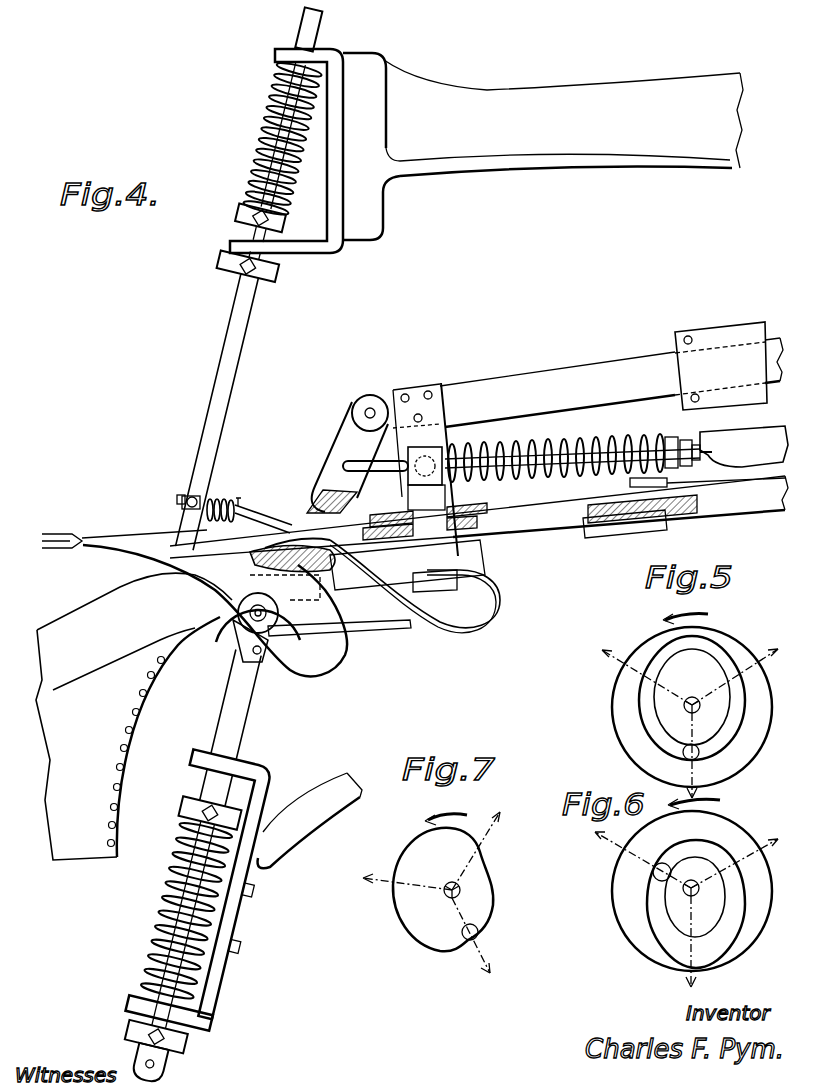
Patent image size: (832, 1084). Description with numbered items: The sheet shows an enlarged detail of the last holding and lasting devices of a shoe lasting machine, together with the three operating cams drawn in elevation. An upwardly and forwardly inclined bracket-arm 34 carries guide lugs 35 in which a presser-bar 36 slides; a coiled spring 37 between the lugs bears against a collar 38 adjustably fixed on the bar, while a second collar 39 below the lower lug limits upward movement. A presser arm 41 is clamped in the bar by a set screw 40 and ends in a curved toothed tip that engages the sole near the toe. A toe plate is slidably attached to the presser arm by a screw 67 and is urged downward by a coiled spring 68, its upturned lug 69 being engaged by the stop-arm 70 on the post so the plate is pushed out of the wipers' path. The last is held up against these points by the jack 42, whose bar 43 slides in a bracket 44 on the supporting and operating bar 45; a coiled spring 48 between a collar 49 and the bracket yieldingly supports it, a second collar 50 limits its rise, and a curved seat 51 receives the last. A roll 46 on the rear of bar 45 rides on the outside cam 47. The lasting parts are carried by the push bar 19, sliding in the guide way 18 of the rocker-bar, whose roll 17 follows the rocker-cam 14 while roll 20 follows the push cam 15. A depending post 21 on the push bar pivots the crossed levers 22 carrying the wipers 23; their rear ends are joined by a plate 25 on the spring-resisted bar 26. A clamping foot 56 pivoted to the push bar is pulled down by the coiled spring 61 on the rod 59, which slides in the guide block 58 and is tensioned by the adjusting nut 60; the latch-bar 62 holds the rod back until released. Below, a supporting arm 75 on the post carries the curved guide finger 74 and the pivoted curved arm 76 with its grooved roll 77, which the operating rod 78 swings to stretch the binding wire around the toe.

In FIG. 5, the rocker-cam 14 is at (612, 717).
In FIG. 6, the push cam 15 is at (737, 942).
In FIG. 5, the roll 17 is at (683, 753).
In FIG. 4, the supporting guide way 18 is at (720, 332).
In FIG. 4, the push bar 19 is at (597, 370).
In FIG. 6, the roll 20 is at (655, 875).
In FIG. 4, the depending post 21 is at (448, 497).
In FIG. 4, the crossed levers 22 is at (556, 515).
In FIG. 4, the wipers 23 is at (425, 516).
In FIG. 4, the plate 25 is at (600, 530).
In FIG. 4, the bar 26 is at (758, 512).
In FIG. 4, the bracket-arm 34 is at (543, 146).
In FIG. 4, the guide lugs 35 is at (282, 50).
In FIG. 4, the presser-bar 36 is at (222, 420).
In FIG. 4, the coiled spring 37 is at (262, 130).
In FIG. 4, the collar 38 is at (243, 203).
In FIG. 4, the second collar 39 is at (213, 274).
In FIG. 4, the set screw 40 is at (183, 503).
In FIG. 4, the presser arm 41 is at (183, 500).
In FIG. 4, the jack 42 is at (134, 762).
In FIG. 4, the bar 43 is at (243, 705).
In FIG. 4, the bracket 44 is at (272, 788).
In FIG. 4, the supporting and operating bar 45 is at (300, 840).
In FIG. 7, the roll 46 is at (480, 932).
In FIG. 7, the outside cam 47 is at (410, 920).
In FIG. 4, the coiled spring 48 is at (175, 890).
In FIG. 4, the collar 49 is at (182, 810).
In FIG. 4, the second collar 50 is at (130, 1035).
In FIG. 4, the curved seat 51 is at (283, 614).
In FIG. 4, the clamping foot 56 is at (347, 425).
In FIG. 4, the guide block 58 is at (445, 450).
In FIG. 4, the rod 59 is at (367, 462).
In FIG. 4, the adjusting nut 60 is at (676, 440).
In FIG. 4, the coiled spring 61 is at (586, 442).
In FIG. 4, the latch-bar 62 is at (744, 446).
In FIG. 4, the screw 67 is at (290, 525).
In FIG. 4, the coiled spring 68 is at (205, 512).
In FIG. 4, the lug 69 is at (240, 500).
In FIG. 4, the stop-arm 70 is at (256, 500).
In FIG. 4, the curved guide finger 74 is at (465, 617).
In FIG. 4, the supporting arm 75 is at (398, 565).
In FIG. 4, the curved arm 76 is at (118, 545).
In FIG. 4, the grooved roll 77 is at (110, 530).
In FIG. 4, the operating rod 78 is at (392, 632).